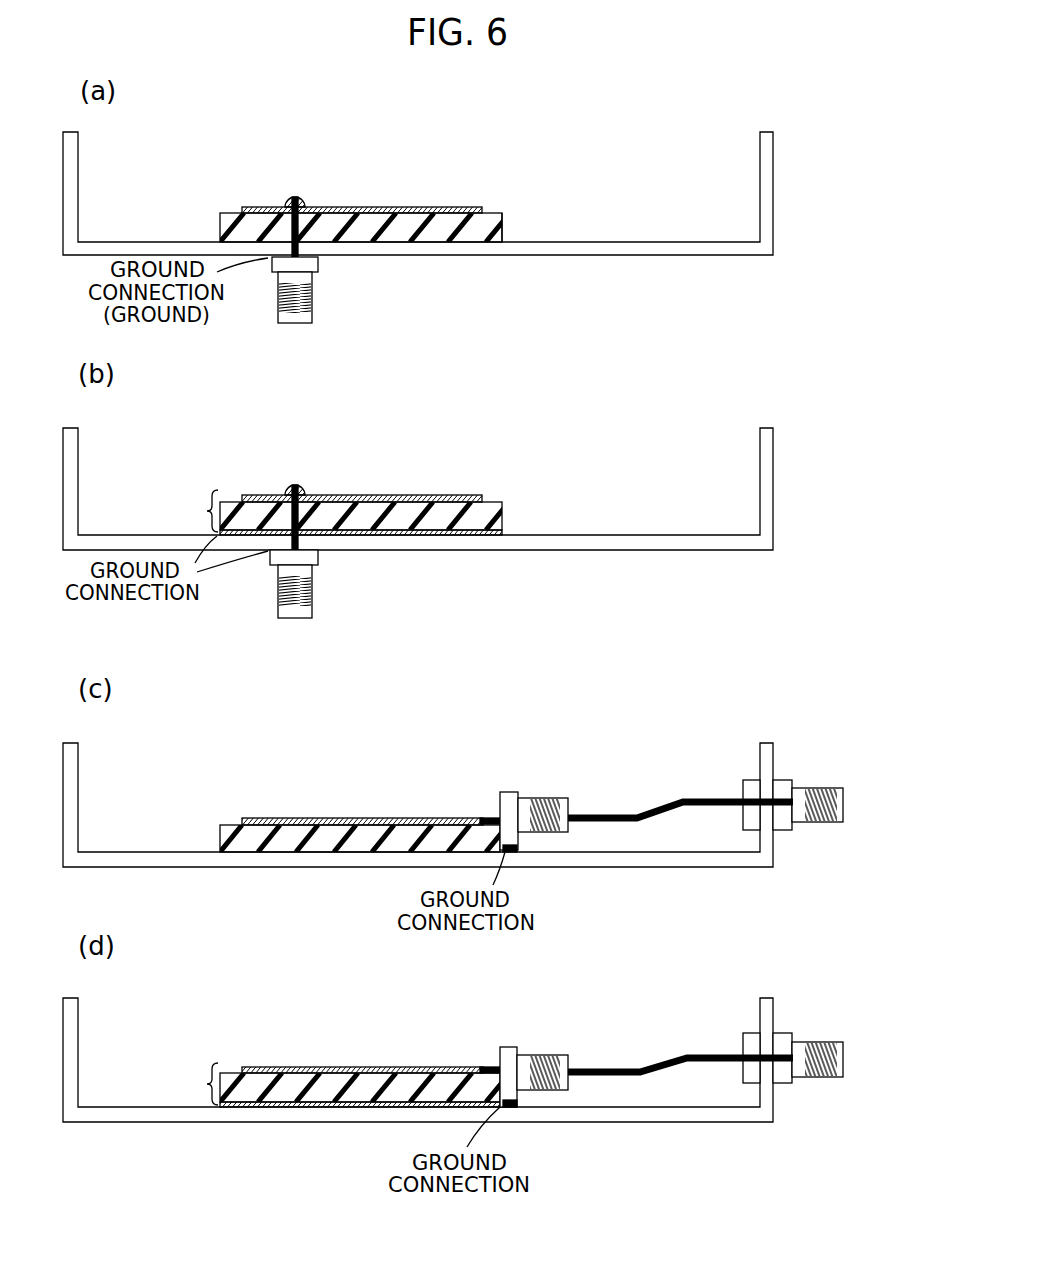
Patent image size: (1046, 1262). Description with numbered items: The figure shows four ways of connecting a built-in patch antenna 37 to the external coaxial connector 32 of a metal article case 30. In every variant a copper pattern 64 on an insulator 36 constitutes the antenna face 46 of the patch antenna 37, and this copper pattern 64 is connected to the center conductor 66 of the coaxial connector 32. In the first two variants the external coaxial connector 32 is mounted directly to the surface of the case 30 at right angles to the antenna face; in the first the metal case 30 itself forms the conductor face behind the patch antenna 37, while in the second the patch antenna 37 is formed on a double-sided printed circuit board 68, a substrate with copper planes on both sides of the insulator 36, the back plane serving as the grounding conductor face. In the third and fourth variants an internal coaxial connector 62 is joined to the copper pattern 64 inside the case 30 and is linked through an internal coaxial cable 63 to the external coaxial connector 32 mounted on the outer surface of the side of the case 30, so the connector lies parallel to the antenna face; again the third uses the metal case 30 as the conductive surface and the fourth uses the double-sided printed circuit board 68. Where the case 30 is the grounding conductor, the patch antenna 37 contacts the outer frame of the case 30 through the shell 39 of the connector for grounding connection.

The article case 30 is at (563, 258).
The external coaxial connector 32 is at (312, 298).
The insulator 36 is at (228, 212).
The patch antenna 37 is at (500, 161).
The shell 39 is at (318, 263).
The antenna face 46 is at (497, 206).
The internal coaxial connector 62 is at (545, 1055).
The internal coaxial cable 63 is at (655, 810).
The copper pattern 64 is at (372, 1102).
The center conductor 66 is at (487, 1070).
The double-sided printed circuit board 68 is at (206, 511).